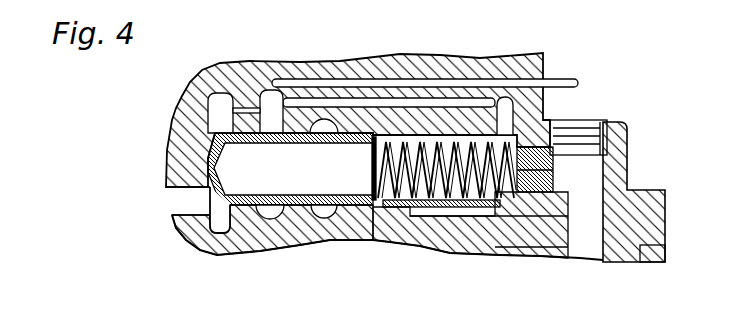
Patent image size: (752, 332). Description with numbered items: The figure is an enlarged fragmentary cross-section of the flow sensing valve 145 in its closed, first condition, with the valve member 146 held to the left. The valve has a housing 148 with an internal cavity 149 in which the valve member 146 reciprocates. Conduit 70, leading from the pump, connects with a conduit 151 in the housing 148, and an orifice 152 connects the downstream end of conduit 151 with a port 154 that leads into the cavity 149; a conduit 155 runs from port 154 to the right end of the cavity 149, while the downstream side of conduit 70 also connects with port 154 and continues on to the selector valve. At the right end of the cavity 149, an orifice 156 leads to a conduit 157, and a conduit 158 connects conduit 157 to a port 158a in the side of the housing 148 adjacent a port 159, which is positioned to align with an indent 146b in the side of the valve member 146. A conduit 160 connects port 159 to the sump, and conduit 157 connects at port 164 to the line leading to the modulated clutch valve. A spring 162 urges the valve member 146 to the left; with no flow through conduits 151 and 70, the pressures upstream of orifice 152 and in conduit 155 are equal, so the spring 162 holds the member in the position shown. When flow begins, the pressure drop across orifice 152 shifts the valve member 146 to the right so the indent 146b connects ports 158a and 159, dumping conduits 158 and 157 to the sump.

The flow sensing valve 145 is at (397, 34).
The housing 148 is at (172, 134).
The conduit 70 is at (570, 77).
The orifice 152 is at (241, 110).
The conduit 155 is at (457, 101).
The port 154 is at (273, 125).
The internal cavity 149 is at (347, 134).
The valve member 146 is at (252, 222).
The indent 146b is at (325, 205).
The conduit 151 is at (212, 226).
The port 159 is at (312, 218).
The conduit 158 is at (473, 217).
The port 158a is at (388, 216).
The conduit 160 is at (327, 241).
The spring 162 is at (512, 145).
The orifice 156 is at (553, 170).
The conduit 157 is at (597, 240).
The port 164 is at (598, 261).